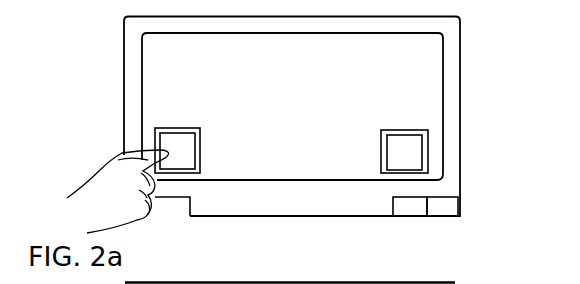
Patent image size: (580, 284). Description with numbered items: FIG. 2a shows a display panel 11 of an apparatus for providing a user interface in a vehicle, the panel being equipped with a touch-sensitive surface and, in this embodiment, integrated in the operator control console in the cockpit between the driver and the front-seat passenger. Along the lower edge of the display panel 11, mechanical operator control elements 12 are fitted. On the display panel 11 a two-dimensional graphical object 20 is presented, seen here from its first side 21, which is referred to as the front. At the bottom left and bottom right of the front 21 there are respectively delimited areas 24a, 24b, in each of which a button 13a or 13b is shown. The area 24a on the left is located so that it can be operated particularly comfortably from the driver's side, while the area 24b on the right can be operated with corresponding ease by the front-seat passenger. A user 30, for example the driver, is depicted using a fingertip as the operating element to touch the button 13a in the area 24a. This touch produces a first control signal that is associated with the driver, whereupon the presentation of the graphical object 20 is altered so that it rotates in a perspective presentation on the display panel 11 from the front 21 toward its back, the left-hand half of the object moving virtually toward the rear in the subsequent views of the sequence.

The display panel 11 is at (447, 53).
The graphical object 20 is at (422, 102).
The first side 21 is at (283, 107).
The button 13a is at (167, 130).
The delimited area 24a is at (154, 138).
The button 13b is at (410, 145).
The delimited area 24b is at (427, 156).
The mechanical operator control elements 12 is at (417, 208).
The user 30 is at (110, 180).